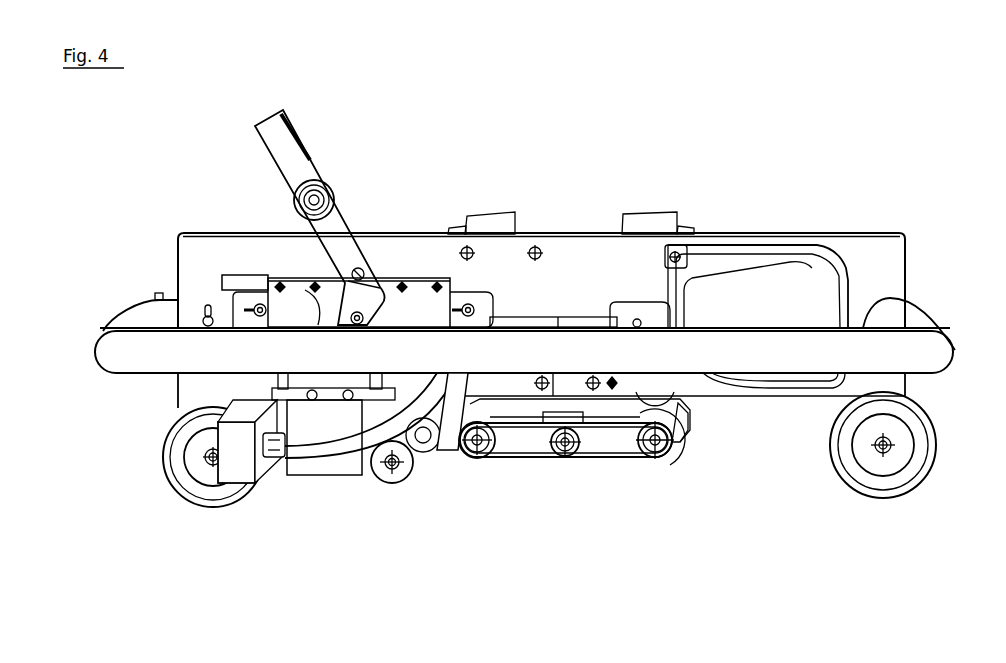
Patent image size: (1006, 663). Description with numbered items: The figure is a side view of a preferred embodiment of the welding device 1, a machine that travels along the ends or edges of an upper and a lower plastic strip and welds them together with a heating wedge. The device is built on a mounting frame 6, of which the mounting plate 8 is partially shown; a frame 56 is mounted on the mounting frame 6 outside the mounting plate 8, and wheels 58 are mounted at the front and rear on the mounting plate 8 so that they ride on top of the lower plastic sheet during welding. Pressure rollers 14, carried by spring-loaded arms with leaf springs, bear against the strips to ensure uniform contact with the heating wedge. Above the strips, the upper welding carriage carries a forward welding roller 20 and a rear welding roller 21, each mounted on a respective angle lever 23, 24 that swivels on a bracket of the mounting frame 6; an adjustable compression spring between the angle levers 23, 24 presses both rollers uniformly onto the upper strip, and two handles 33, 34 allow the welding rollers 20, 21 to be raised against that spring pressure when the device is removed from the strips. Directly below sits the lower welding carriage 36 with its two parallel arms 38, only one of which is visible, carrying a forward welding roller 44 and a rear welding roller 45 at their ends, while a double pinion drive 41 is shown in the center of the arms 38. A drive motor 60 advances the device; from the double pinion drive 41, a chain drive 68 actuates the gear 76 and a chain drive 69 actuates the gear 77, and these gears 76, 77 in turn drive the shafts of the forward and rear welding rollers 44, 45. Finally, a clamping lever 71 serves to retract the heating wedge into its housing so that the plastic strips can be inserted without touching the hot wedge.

The welding device 1 is at (572, 197).
The mounting frame 6 is at (960, 270).
The mounting plate 8 is at (868, 256).
The pressure rollers 14 is at (392, 473).
The forward welding roller 20 is at (448, 452).
The rear welding roller 21 is at (685, 403).
The angle lever 23 is at (464, 228).
The angle lever 24 is at (678, 226).
The handle 33 is at (502, 225).
The handle 34 is at (633, 225).
The lower welding carriage 36 is at (553, 492).
The parallel arms 38 is at (598, 439).
The double pinion drive 41 is at (567, 457).
The forward welding roller 44 is at (462, 455).
The rear welding roller 45 is at (683, 435).
The frame 56 is at (130, 350).
The wheels 58 is at (215, 490).
The drive motor 60 is at (773, 308).
The chain drive 68 is at (518, 457).
The chain drive 69 is at (633, 458).
The clamping lever 71 is at (340, 240).
The gear 76 is at (482, 463).
The gear 77 is at (655, 460).